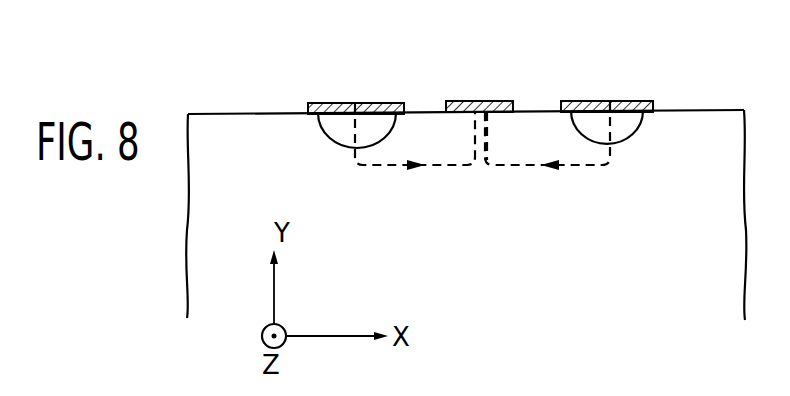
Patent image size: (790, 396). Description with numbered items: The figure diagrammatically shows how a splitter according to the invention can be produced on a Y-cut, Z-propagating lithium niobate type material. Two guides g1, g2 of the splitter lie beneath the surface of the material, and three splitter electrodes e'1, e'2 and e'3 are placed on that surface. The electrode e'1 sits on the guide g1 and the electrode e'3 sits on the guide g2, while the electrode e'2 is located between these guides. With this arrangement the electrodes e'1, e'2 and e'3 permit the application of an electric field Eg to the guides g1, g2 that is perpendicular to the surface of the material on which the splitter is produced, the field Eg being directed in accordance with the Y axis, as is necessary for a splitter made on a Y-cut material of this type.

The splitter electrode e'1 is at (356, 67).
The splitter electrode e'2 is at (479, 68).
The splitter electrode e'3 is at (607, 67).
The guide g1 is at (382, 140).
The guide g2 is at (578, 136).
The electric field Eg is at (355, 152).